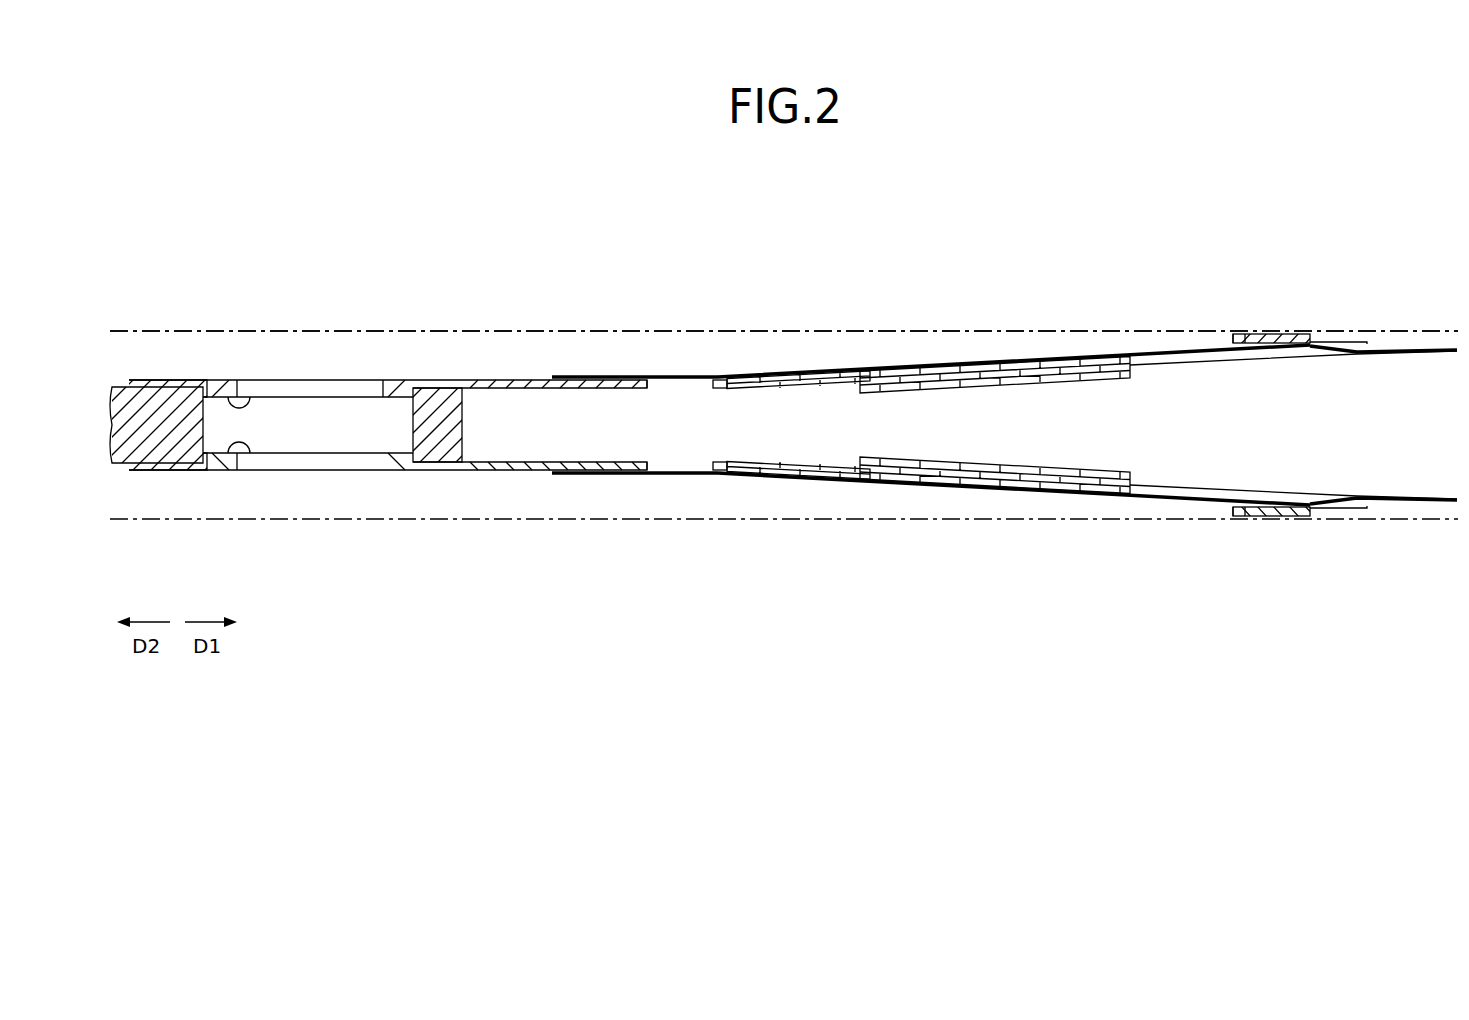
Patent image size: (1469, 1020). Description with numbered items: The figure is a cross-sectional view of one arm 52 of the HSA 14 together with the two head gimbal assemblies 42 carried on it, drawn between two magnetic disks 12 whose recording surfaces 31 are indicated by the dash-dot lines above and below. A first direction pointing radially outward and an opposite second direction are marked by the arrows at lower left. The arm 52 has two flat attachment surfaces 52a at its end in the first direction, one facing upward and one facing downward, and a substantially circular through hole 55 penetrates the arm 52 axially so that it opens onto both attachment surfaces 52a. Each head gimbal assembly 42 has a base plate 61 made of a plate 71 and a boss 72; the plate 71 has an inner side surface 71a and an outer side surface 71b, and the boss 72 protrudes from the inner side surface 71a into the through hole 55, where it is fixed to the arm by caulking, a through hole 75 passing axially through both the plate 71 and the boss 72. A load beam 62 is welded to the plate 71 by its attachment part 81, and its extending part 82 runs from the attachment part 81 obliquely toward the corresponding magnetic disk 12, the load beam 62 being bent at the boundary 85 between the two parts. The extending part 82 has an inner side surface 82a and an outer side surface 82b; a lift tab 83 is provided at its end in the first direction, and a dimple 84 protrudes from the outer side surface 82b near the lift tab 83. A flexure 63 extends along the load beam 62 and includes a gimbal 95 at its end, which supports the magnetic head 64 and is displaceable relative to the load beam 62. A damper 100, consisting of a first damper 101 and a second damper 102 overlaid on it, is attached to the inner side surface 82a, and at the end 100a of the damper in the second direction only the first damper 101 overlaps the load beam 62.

The HSA 14 is at (157, 216).
The magnetic disk 12 is at (452, 340).
The recording surface 31 is at (784, 426).
The arm 52 is at (183, 405).
The attachment surface 52a is at (152, 383).
The boss 72 is at (250, 385).
The through hole 75 is at (318, 389).
The through hole 55 is at (355, 405).
The outer side surface 71b is at (403, 383).
The base plate 61 is at (509, 380).
The plate 71 is at (539, 386).
The inner side surface 71a is at (586, 375).
The attachment part 81 is at (636, 375).
The boundary 85 is at (697, 375).
The end of the damper 100a is at (742, 375).
The first damper 101 is at (829, 363).
The second damper 102 is at (940, 363).
The damper 100 is at (1012, 401).
The extending part 82 is at (1027, 425).
The inner side surface 82a is at (1173, 346).
The outer side surface 82b is at (1198, 345).
The load beam 62 is at (1297, 357).
The lift tab 83 is at (1443, 356).
The magnetic head 64 is at (1266, 335).
The gimbal 95 is at (1243, 336).
The dimple 84 is at (1283, 336).
The flexure 63 is at (1349, 341).
The head gimbal assembly 42 is at (1434, 347).